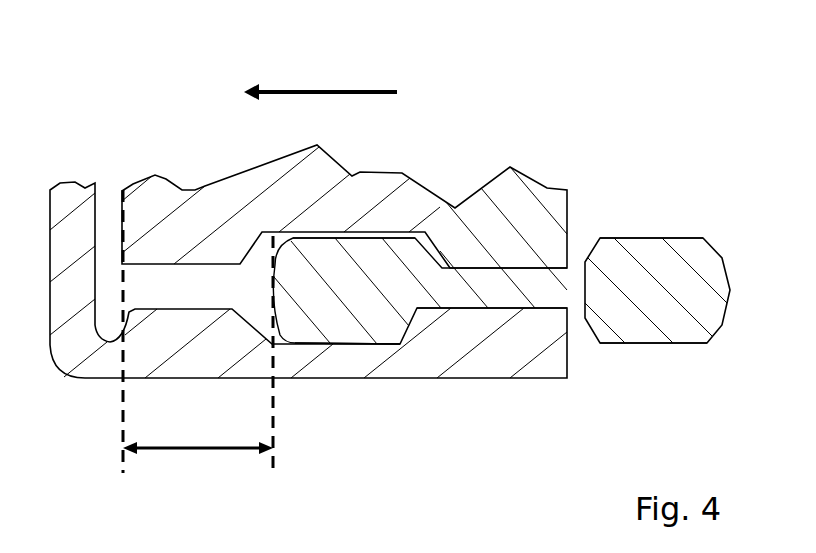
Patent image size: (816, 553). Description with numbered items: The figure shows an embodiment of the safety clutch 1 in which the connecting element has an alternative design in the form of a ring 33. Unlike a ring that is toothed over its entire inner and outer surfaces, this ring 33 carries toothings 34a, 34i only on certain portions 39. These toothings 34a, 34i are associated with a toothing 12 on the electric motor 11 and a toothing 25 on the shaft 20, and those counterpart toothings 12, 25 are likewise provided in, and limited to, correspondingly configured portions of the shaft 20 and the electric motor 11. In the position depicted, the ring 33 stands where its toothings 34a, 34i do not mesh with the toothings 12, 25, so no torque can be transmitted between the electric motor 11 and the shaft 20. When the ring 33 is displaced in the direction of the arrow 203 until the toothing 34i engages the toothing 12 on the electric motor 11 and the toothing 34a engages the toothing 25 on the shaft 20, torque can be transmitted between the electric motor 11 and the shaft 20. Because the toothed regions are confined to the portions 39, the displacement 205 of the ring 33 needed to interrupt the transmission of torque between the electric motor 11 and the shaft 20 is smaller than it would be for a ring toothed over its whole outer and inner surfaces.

The safety clutch 1 is at (175, 110).
The electric motor 11 is at (295, 196).
The toothing 12 is at (517, 252).
The shaft 20 is at (70, 298).
The toothing 25 is at (474, 323).
The ring 33 is at (658, 262).
The toothing 34a is at (640, 238).
The toothing 34i is at (608, 345).
The portions 39 is at (322, 240).
The arrow 203 is at (307, 90).
The displacement 205 is at (181, 455).